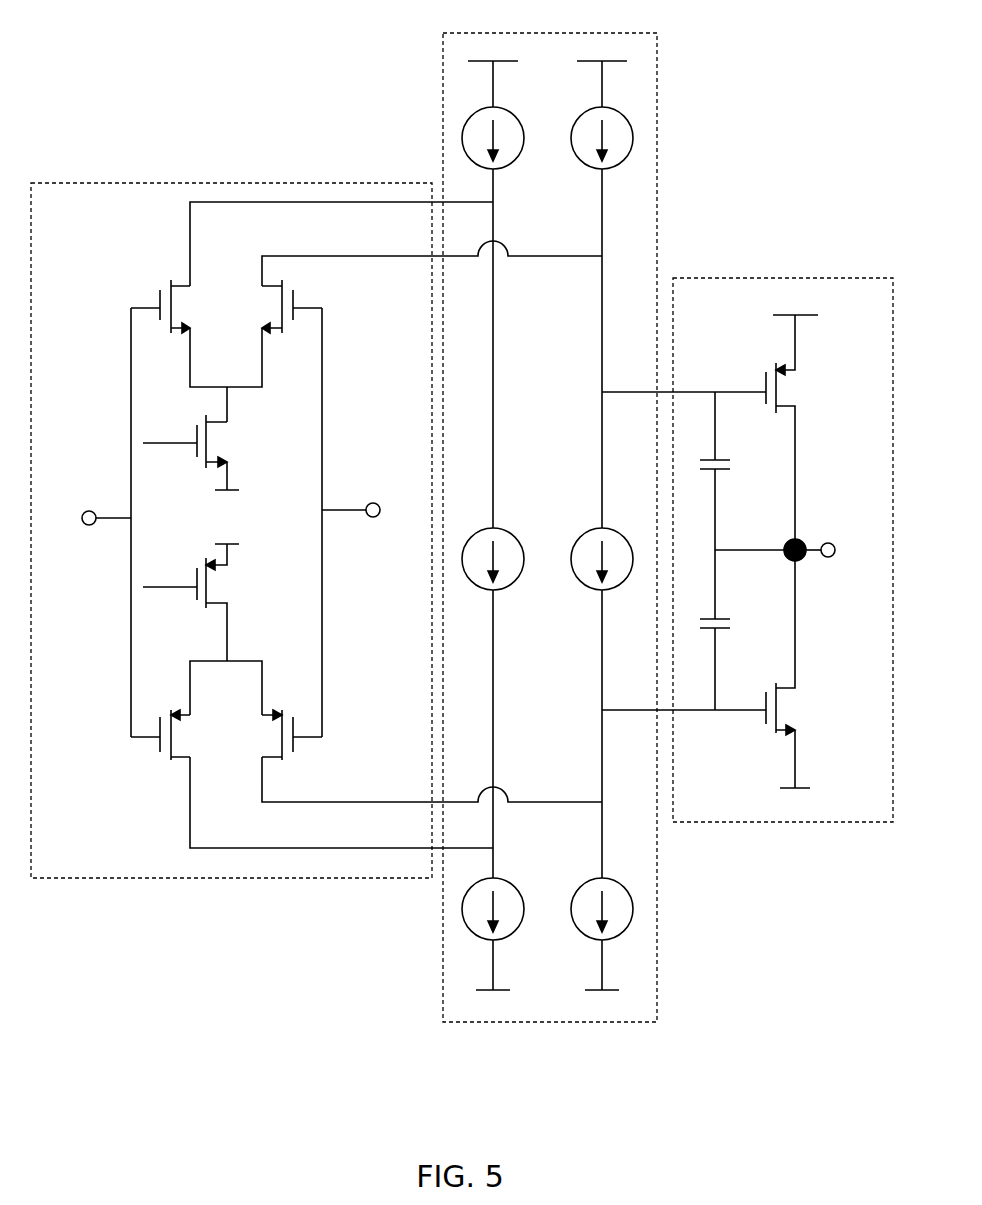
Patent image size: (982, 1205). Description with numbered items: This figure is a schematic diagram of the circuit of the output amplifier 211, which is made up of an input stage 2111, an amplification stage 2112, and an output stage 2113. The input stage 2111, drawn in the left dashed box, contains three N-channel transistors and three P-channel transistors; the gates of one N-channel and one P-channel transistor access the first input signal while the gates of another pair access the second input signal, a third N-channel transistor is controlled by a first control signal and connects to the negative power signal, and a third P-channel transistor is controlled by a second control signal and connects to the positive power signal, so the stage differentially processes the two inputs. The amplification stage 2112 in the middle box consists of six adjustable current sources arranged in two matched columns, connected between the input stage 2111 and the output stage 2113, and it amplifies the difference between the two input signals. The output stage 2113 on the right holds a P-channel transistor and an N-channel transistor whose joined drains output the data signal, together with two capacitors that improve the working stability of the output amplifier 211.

The output amplifier 211 is at (765, 68).
The input stage 2111 is at (147, 183).
The amplification stage 2112 is at (657, 181).
The output stage 2113 is at (745, 278).